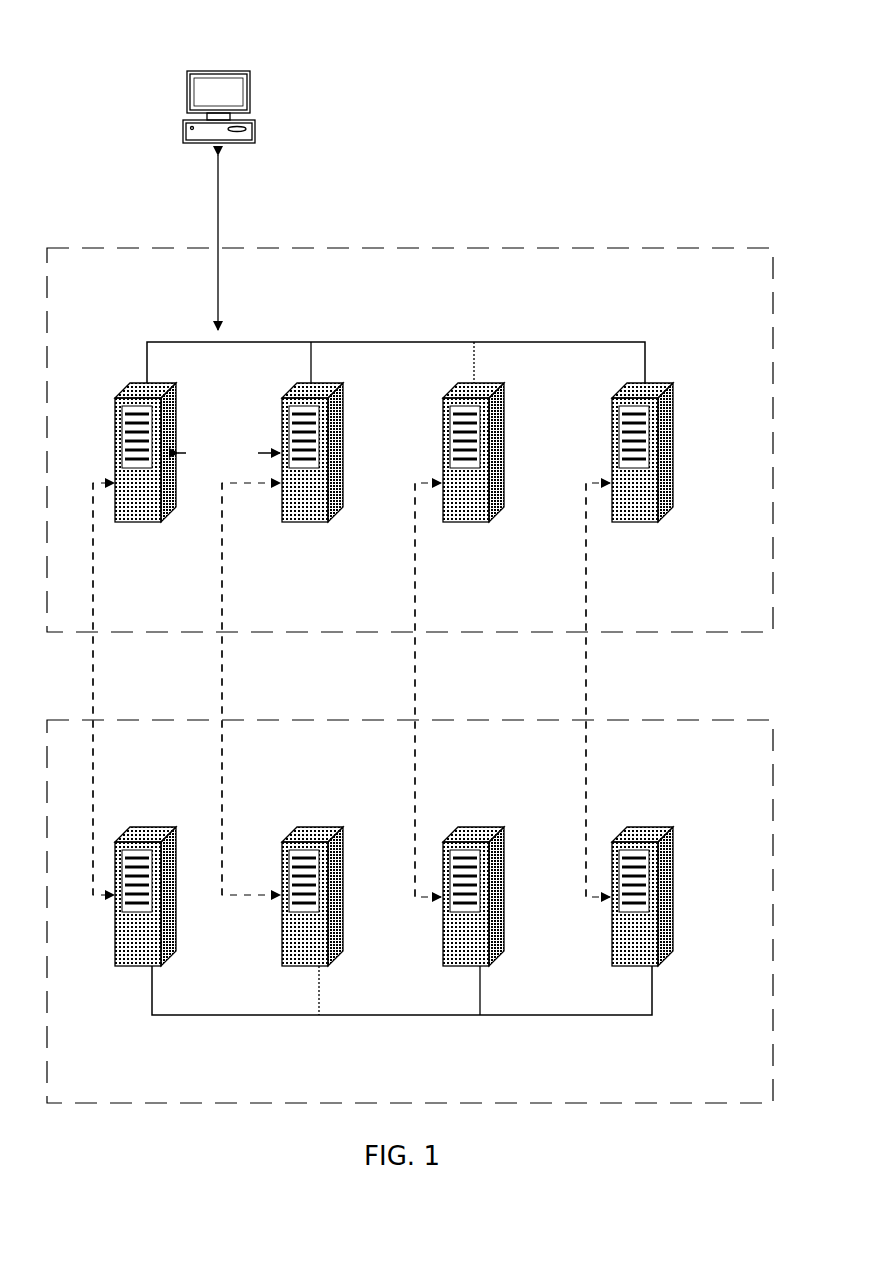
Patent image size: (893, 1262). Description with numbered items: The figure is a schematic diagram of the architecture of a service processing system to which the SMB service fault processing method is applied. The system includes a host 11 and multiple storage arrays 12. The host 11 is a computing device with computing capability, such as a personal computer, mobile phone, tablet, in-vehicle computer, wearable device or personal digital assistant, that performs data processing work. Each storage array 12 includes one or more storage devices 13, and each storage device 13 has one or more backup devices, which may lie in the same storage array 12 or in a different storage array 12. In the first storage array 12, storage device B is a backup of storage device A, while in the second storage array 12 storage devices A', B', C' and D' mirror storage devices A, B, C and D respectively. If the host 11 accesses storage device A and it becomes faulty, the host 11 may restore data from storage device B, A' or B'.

The host 11 is at (229, 68).
The storage array 12 is at (524, 248).
The storage device 13 is at (657, 383).